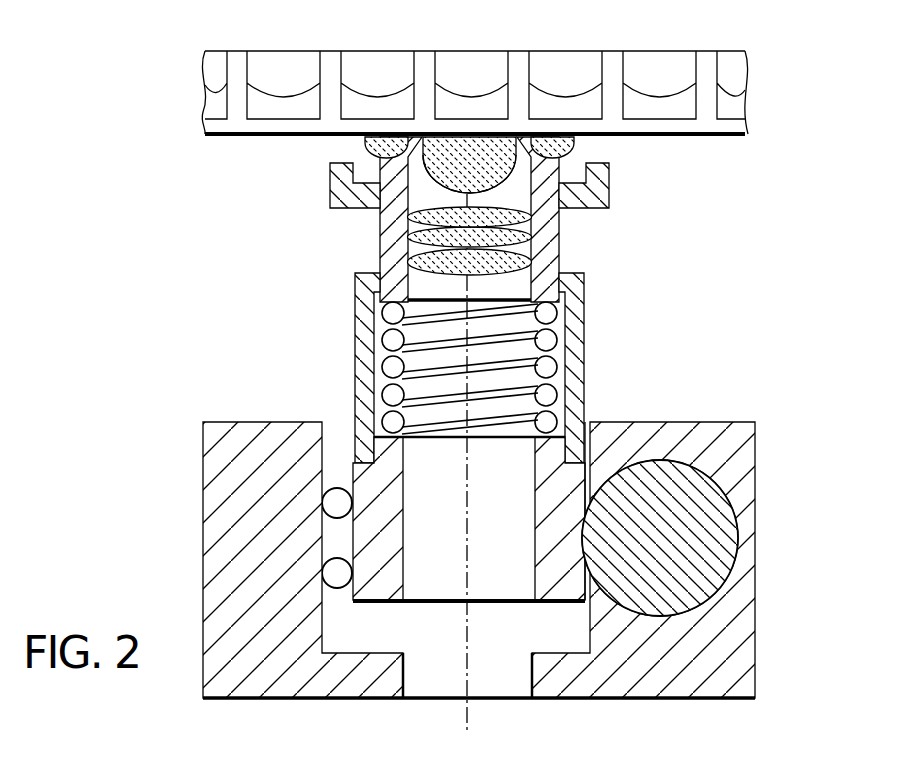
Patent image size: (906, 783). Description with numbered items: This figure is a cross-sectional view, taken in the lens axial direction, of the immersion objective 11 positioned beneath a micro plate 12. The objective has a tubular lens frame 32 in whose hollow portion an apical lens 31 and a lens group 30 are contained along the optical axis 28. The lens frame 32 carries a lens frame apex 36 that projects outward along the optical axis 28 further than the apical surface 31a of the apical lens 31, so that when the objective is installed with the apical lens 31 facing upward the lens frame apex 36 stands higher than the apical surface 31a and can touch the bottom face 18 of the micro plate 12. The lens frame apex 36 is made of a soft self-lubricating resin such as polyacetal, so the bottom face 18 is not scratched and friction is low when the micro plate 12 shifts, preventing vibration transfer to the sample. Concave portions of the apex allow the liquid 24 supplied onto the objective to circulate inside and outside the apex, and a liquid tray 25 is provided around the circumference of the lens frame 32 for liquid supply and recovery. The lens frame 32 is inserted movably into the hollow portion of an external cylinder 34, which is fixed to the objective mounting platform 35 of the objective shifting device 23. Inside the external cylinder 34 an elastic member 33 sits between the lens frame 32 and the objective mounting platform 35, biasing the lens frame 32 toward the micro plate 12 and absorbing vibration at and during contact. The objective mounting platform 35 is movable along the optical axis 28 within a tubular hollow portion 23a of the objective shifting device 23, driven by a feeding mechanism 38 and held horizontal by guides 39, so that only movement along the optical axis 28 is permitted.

The immersion objective 11 is at (260, 277).
The micro plate 12 is at (672, 51).
The bottom face 18 is at (237, 137).
The objective shifting device 23 is at (756, 653).
The tubular hollow portion 23a is at (342, 540).
The liquid 24 is at (364, 148).
The liquid tray 25 is at (330, 202).
The optical axis 28 is at (452, 725).
The lens group 30 is at (405, 243).
The apical lens 31 is at (476, 182).
The apical surface 31a is at (454, 134).
The lens frame 32 is at (560, 262).
The elastic member 33 is at (560, 313).
The external cylinder 34 is at (585, 363).
The objective mounting platform 35 is at (599, 472).
The lens frame apex 36 is at (531, 148).
The feeding mechanism 38 is at (738, 530).
The guides 39 is at (334, 487).